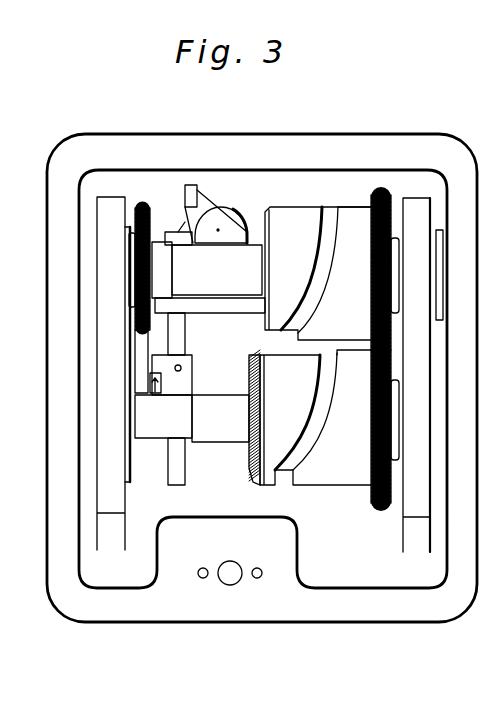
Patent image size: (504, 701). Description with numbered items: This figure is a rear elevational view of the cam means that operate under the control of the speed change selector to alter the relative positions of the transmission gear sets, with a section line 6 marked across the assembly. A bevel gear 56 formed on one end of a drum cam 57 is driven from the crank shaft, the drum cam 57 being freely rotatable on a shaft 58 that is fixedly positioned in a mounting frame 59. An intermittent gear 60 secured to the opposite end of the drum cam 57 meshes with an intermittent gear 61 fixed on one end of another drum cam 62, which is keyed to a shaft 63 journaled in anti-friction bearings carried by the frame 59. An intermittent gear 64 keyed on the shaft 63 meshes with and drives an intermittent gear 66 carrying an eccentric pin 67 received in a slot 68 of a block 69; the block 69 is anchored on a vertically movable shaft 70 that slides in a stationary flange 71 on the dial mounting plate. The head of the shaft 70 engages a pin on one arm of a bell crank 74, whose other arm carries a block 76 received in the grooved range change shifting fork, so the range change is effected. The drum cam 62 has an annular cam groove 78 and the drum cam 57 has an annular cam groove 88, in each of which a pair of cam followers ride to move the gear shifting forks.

The section line 6- 6 is at (180, 155).
The bevel gear 56 is at (249, 477).
The drum cam 57 is at (329, 488).
The shaft 58 is at (217, 400).
The mounting frame 59 is at (124, 510).
The intermittent gear 60 is at (374, 424).
The intermittent gear 61 is at (375, 264).
The drum cam 62 is at (357, 207).
The shaft 63 is at (264, 278).
The intermittent gear 64 is at (143, 258).
The intermittent gear 66 is at (136, 351).
The eccentric pin 67 is at (159, 401).
The slot 68 is at (161, 384).
The block 69 is at (191, 372).
The vertically movable shaft 70 is at (183, 336).
The stationary flange 71 is at (240, 310).
The bell crank 74 is at (219, 205).
The block 76 is at (182, 200).
The annular cam groove 78 is at (326, 248).
The annular cam groove 88 is at (305, 419).